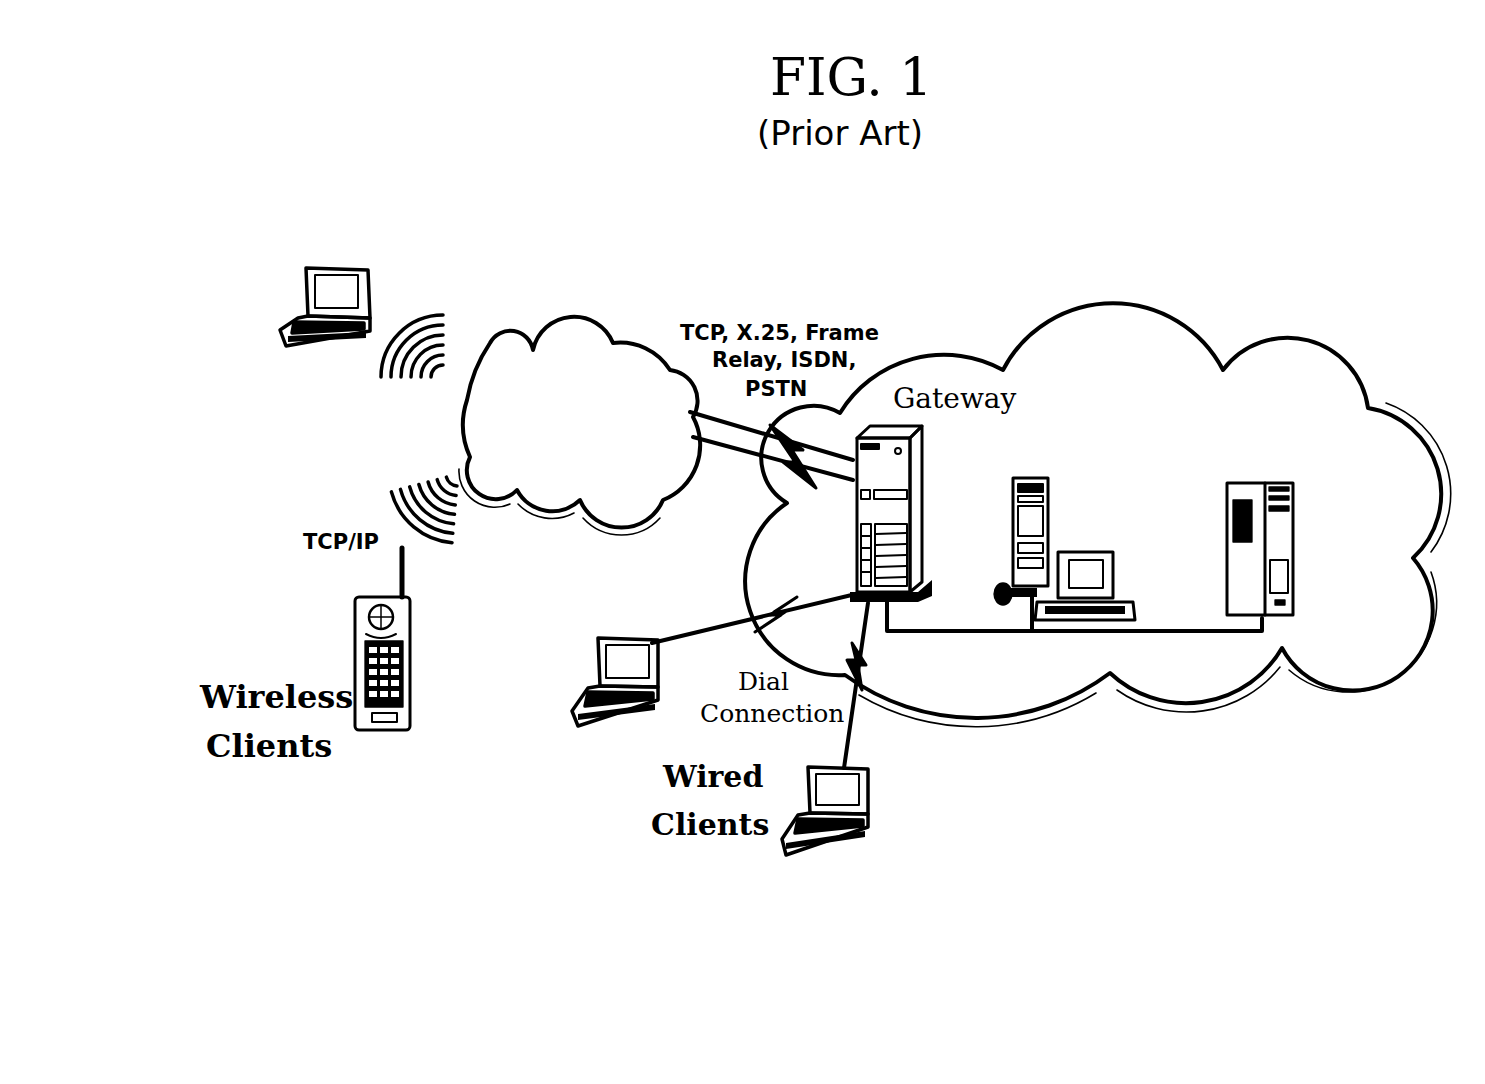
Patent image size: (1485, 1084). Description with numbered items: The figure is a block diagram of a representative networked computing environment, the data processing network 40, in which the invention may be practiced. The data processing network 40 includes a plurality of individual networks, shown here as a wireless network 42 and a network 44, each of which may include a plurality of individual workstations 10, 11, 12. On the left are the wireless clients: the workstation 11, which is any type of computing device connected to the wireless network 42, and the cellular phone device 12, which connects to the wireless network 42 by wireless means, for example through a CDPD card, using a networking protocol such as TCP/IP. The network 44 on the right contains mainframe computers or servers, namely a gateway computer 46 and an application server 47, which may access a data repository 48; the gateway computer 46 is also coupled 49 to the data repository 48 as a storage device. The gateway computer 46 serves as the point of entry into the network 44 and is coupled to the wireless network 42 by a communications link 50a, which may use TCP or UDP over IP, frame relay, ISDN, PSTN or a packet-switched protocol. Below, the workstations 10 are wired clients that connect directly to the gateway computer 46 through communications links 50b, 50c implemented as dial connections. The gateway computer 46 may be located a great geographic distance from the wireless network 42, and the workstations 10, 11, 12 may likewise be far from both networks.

The workstation 10 is at (743, 733).
The workstation 11 is at (361, 310).
The cellular phone device 12 is at (413, 603).
The data processing network 40 is at (1244, 859).
The wireless network 42 is at (579, 426).
The network 44 is at (1097, 510).
The gateway computer 46 is at (906, 513).
The application server 47 is at (1064, 538).
The data repository 48 is at (1284, 549).
The coupling 49 is at (1074, 632).
The communications link 50a is at (771, 454).
The communications link 50b is at (756, 616).
The communications link 50c is at (881, 685).